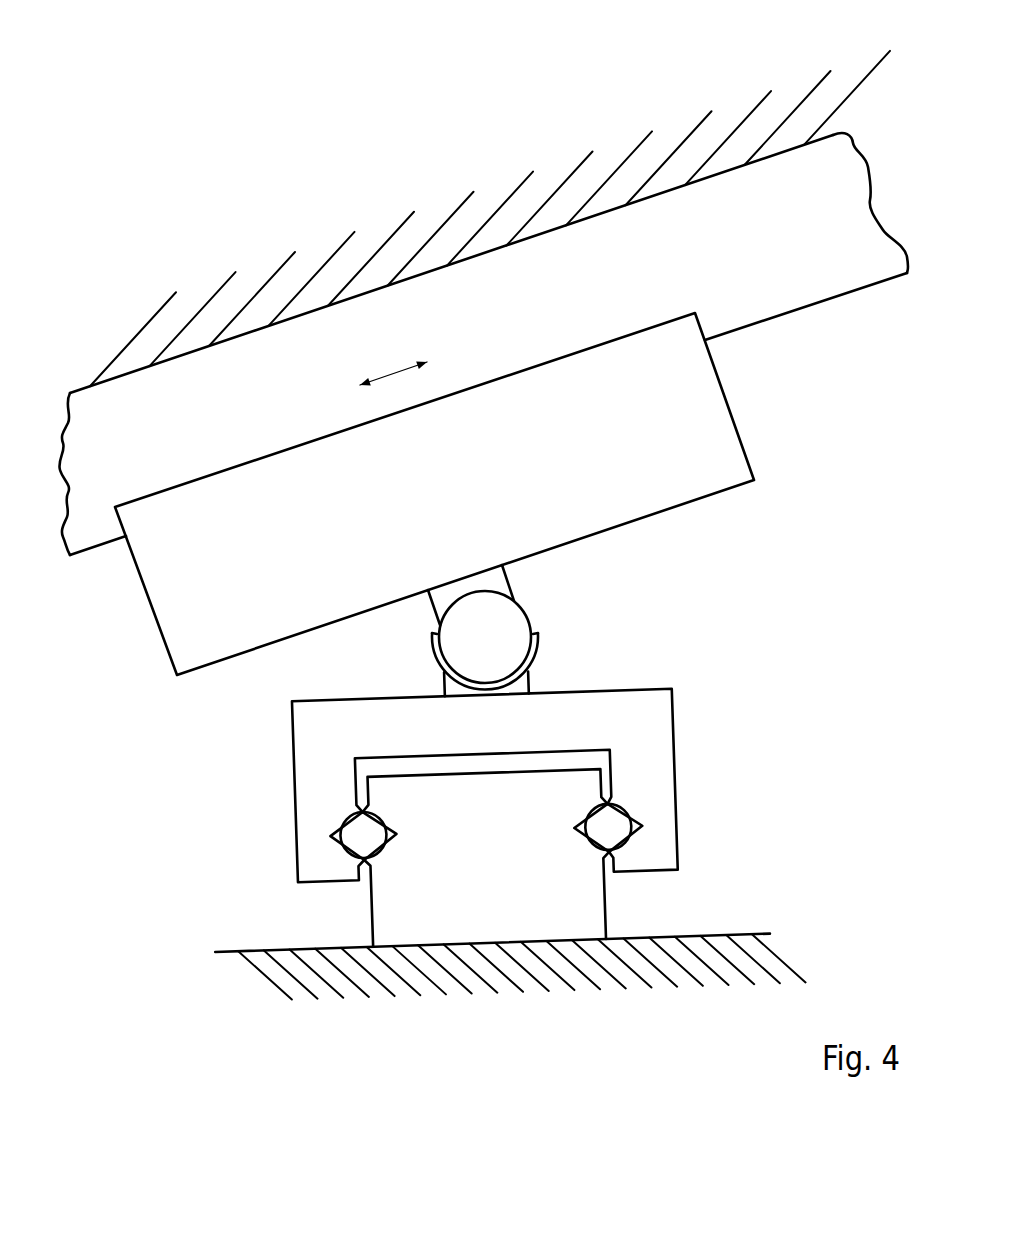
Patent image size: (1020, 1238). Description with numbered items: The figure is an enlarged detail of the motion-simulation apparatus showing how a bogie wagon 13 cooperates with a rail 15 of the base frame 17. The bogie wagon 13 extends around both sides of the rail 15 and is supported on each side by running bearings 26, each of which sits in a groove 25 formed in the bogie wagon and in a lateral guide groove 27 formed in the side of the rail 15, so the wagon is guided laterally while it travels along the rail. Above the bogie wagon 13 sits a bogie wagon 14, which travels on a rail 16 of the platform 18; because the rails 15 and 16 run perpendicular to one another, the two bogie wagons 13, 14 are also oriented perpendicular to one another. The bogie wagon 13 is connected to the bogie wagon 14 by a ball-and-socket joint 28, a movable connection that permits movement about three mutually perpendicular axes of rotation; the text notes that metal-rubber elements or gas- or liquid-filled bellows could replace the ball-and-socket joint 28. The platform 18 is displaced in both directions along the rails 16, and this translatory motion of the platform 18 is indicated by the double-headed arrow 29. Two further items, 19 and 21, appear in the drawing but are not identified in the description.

The bogie wagon 13 is at (650, 710).
The bogie wagon 14 is at (702, 413).
The rail 15 is at (538, 920).
The rail 16 is at (483, 283).
The base frame 17 is at (411, 999).
The platform 18 is at (752, 128).
The base surface hatching 19 is at (458, 975).
The guide surface 21 is at (475, 220).
The groove 25 is at (643, 826).
The running bearings 26 is at (612, 825).
The lateral guide groove 27 is at (573, 828).
The ball-and-socket joint 28 is at (495, 627).
The double-headed arrow 29 is at (392, 373).